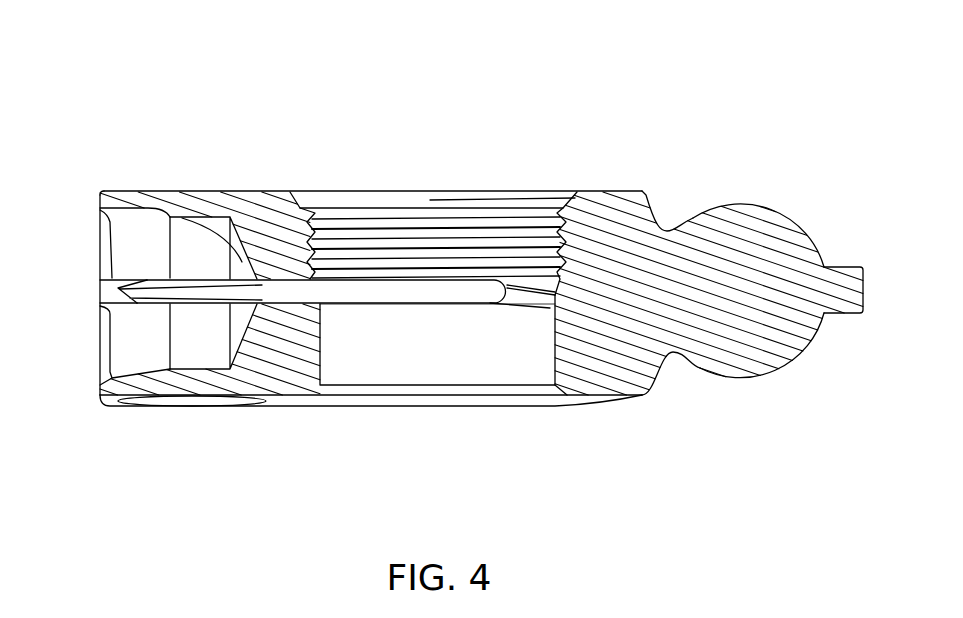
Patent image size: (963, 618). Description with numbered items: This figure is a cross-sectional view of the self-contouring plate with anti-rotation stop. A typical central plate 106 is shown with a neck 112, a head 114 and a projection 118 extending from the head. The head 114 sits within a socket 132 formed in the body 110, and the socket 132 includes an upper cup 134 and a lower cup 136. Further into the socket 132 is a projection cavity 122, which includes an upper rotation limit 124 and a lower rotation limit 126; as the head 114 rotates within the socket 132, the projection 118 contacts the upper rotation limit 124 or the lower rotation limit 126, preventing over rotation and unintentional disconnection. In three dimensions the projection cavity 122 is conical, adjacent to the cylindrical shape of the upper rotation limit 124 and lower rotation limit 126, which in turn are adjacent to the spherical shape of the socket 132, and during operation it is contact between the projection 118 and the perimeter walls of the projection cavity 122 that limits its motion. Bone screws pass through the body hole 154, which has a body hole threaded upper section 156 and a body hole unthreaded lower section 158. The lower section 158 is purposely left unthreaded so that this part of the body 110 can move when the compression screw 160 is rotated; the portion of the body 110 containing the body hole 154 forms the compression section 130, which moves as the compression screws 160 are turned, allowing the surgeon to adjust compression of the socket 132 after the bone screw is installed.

The central plate 106 is at (603, 75).
The body 110 is at (270, 210).
The neck 112 is at (666, 248).
The head 114 is at (752, 233).
The projection 118 is at (852, 292).
The projection cavity 122 is at (162, 208).
The upper rotation limit 124 is at (215, 216).
The lower rotation limit 126 is at (220, 370).
The compression section 130 is at (103, 428).
The socket 132 is at (102, 330).
The upper cup 134 is at (118, 228).
The lower cup 136 is at (123, 320).
The body hole 154 is at (381, 186).
The body hole threaded upper section 156 is at (432, 227).
The body hole unthreaded lower section 158 is at (512, 362).
The compression screw 160 is at (143, 284).